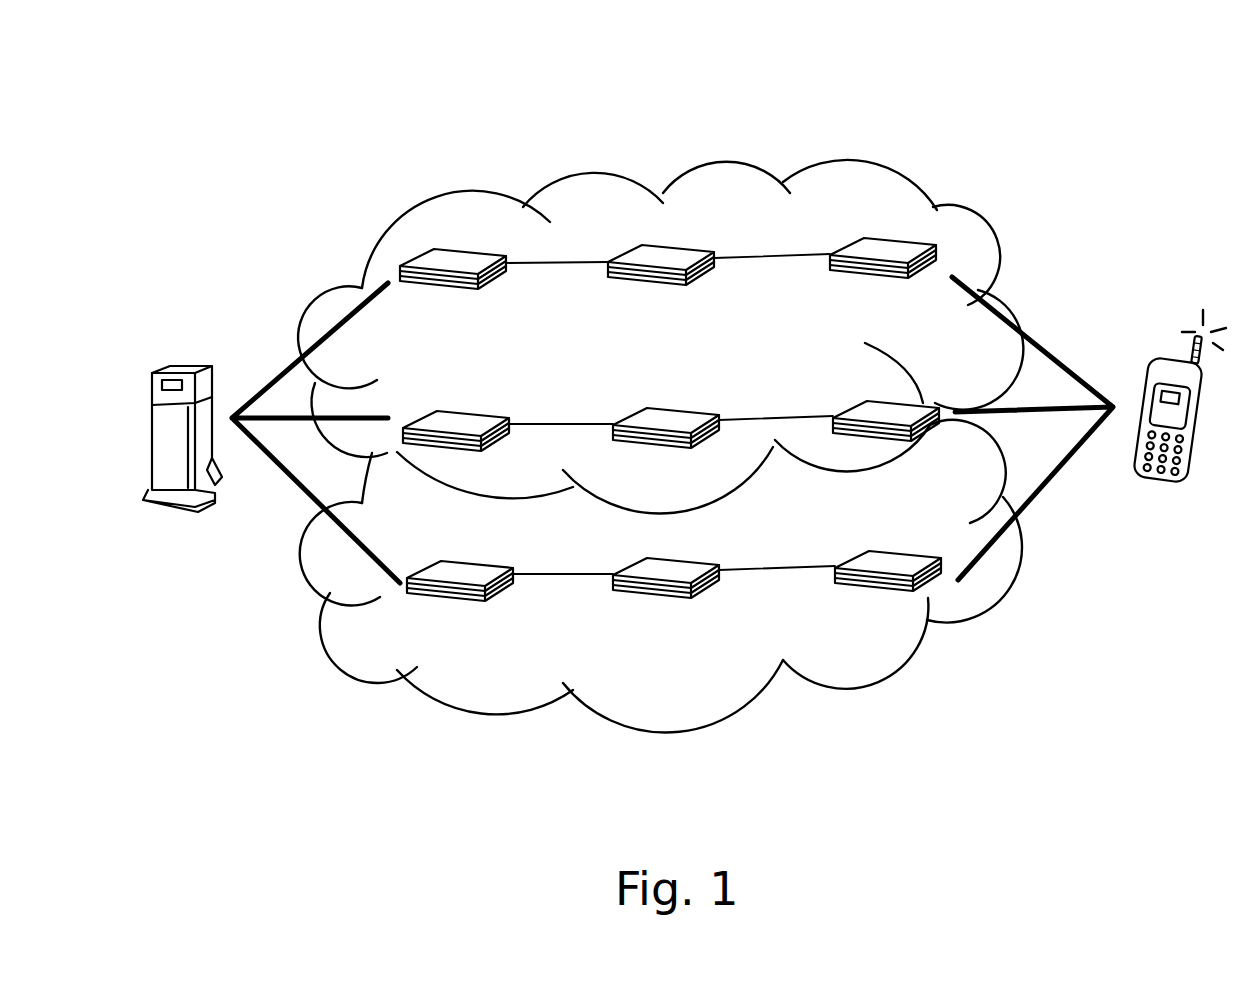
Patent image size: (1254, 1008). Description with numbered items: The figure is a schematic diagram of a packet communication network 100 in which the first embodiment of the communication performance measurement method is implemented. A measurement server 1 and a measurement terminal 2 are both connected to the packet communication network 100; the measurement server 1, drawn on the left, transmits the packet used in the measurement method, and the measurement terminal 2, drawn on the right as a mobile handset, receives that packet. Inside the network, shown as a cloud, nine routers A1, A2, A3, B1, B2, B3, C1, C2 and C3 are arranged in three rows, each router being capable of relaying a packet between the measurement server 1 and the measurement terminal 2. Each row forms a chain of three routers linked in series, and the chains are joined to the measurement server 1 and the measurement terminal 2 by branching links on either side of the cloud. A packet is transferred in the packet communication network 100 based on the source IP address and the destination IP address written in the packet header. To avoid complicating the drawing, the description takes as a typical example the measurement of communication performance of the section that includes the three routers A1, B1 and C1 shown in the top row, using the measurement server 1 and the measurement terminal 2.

The packet communication network 100 is at (748, 123).
The measurement server 1 is at (167, 448).
The measurement terminal 2 is at (1178, 375).
The router A1 is at (470, 258).
The router B1 is at (680, 254).
The router C1 is at (897, 247).
The router A2 is at (472, 422).
The router B2 is at (682, 417).
The router C2 is at (901, 410).
The router A3 is at (472, 572).
The router B3 is at (682, 567).
The router C3 is at (901, 560).